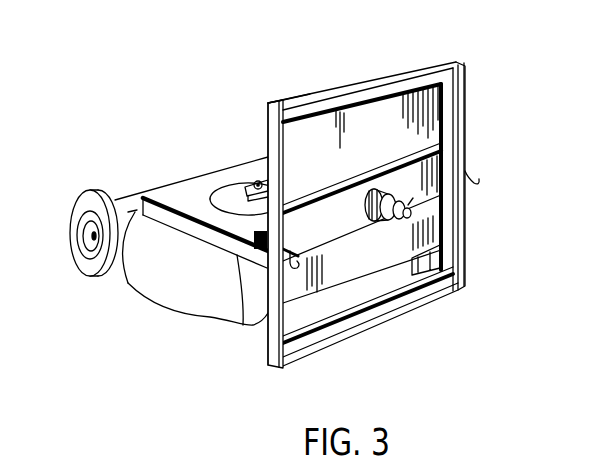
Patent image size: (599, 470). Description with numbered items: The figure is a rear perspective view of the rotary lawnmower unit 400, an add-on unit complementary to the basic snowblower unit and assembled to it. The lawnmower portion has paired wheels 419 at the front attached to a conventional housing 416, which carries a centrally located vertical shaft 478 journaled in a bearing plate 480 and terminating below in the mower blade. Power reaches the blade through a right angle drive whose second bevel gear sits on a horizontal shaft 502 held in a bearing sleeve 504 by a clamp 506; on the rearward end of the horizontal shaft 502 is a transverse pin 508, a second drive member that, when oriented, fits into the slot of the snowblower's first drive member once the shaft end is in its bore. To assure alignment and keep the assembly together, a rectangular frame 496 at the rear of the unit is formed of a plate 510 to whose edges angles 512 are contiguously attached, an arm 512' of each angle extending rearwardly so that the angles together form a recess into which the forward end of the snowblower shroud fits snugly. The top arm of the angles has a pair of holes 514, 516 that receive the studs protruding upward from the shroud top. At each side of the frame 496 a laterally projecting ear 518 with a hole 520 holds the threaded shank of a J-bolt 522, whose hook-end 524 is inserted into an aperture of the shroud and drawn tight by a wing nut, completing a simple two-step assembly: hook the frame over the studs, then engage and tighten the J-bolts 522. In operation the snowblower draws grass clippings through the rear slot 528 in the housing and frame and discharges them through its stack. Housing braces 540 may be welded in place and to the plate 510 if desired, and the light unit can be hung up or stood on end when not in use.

The unit 400 is at (94, 128).
The housing 416 is at (163, 188).
The wheels 419 is at (88, 262).
The vertical shaft 478 is at (258, 181).
The bearing plate 480 is at (216, 213).
The frame 496 is at (474, 82).
The horizontal shaft 502 is at (412, 222).
The bearing sleeve 504 is at (407, 192).
The clamp 506 is at (380, 192).
The transverse pin 508 is at (440, 243).
The plate 510 is at (363, 110).
The angles 512 is at (258, 206).
The arm 512' is at (248, 104).
The hole 514 is at (304, 97).
The hole 516 is at (437, 67).
The ear 518 is at (238, 268).
The hole 520 is at (256, 310).
The J-bolt 522 is at (292, 250).
The hook-end 524 is at (299, 262).
The rear slot 528 is at (353, 290).
The housing braces 540 is at (188, 233).